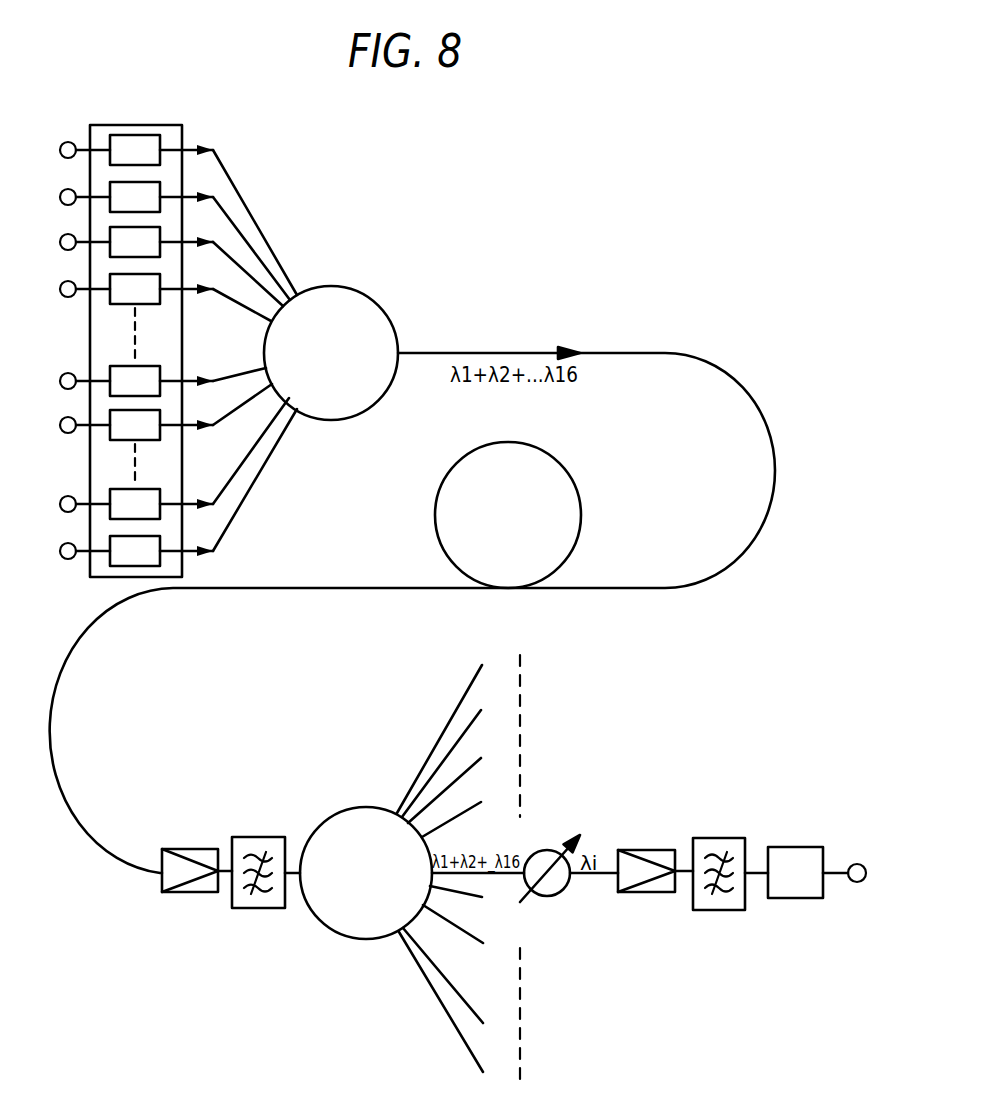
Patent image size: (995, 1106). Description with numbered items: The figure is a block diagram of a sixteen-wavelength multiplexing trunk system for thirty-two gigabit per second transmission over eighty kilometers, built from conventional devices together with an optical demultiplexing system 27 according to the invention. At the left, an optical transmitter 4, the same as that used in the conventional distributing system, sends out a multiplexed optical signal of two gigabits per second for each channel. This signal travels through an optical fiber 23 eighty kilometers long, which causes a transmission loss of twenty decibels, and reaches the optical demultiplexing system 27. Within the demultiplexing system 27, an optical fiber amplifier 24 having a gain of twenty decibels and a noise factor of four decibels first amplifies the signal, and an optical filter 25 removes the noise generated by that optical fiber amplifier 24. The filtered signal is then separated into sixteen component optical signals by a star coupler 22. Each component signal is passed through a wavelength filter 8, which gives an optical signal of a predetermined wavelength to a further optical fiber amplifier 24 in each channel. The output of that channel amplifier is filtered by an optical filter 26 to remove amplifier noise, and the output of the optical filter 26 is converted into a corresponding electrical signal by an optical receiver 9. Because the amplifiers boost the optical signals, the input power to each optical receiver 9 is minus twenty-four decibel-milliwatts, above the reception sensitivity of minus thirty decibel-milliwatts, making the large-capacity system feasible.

The optical transmitter 4 is at (148, 124).
The star coupler 22 is at (362, 290).
The optical fiber 23 is at (581, 492).
The optical fiber amplifier 24 is at (187, 850).
The optical filter 25 is at (262, 838).
The optical filter 26 is at (722, 838).
The optical demultiplexing system 27 is at (356, 807).
The wavelength filter 8 is at (544, 851).
The optical receiver 9 is at (795, 847).